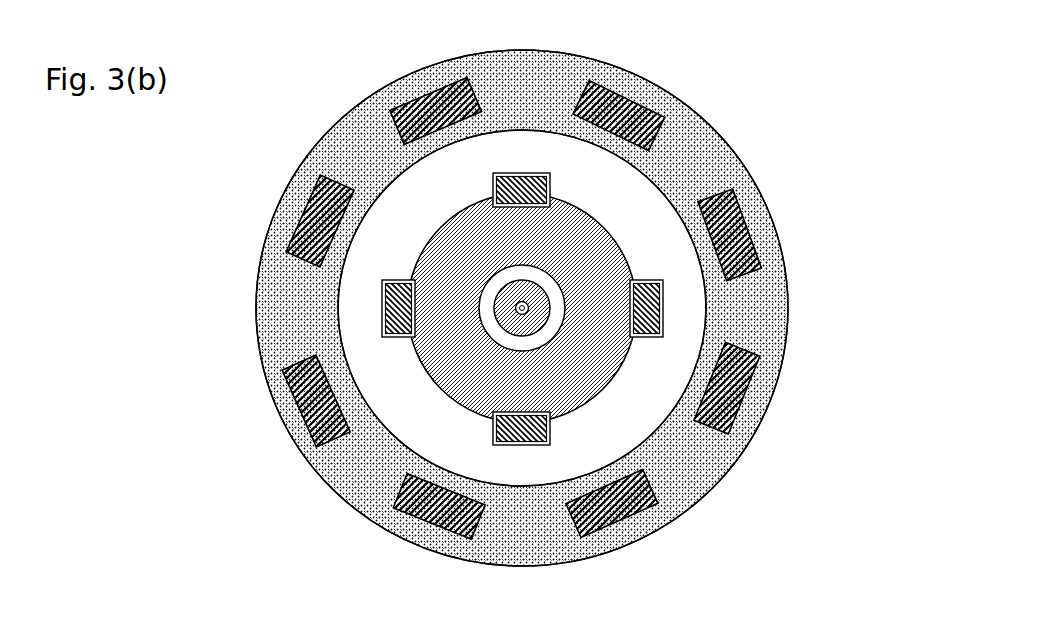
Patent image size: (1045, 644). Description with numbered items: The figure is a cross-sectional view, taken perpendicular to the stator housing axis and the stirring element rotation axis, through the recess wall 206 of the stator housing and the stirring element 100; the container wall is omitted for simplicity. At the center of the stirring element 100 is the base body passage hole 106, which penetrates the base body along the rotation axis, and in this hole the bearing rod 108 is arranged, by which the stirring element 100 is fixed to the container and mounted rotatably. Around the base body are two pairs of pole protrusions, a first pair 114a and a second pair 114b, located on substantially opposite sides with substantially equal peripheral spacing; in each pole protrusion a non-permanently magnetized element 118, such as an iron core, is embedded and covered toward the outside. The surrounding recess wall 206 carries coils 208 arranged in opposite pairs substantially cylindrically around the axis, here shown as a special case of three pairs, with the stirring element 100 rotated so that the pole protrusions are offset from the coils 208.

The stirring element 100 is at (580, 367).
The base body passage hole 106 is at (500, 277).
The bearing rod 108 is at (506, 316).
The first pair of pole protrusions 114a is at (653, 325).
The second pair of pole protrusions 114b is at (542, 187).
The non-permanently magnetized element 118 is at (520, 187).
The recess wall 206 is at (727, 164).
The coils 208 is at (643, 118).